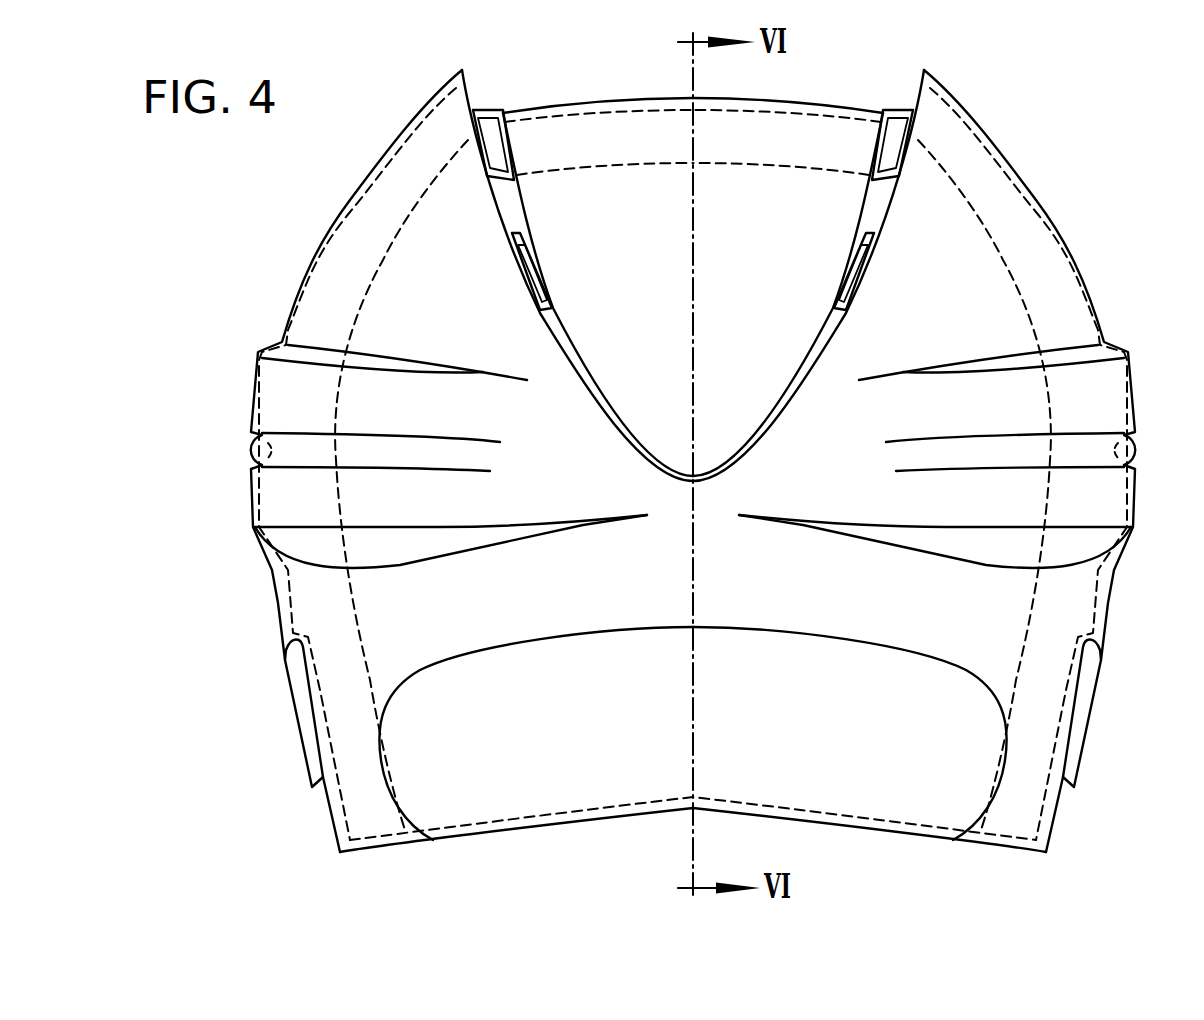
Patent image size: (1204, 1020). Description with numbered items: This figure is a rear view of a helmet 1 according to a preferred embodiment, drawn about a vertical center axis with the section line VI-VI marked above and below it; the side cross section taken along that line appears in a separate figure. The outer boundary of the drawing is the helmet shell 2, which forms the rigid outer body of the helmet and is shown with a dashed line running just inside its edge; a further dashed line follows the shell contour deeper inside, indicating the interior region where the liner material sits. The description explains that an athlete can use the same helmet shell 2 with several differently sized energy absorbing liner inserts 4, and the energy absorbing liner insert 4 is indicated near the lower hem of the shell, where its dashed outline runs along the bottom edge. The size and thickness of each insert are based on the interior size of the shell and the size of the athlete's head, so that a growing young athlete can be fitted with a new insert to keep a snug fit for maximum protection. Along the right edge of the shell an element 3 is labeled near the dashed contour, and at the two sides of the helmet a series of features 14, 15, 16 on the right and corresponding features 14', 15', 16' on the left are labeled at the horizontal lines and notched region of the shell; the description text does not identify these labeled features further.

The helmet 1 is at (1050, 108).
The helmet shell 2 is at (1022, 168).
The inner liner seam 3 is at (1087, 317).
The energy absorbing liner insert 4 is at (1002, 840).
The upper side pad 14 is at (1030, 393).
The lower side pad 15 is at (971, 529).
The side notch 16 is at (1049, 454).
The upper side pad 14' is at (342, 393).
The lower side pad 15' is at (408, 531).
The side notch 16' is at (320, 452).